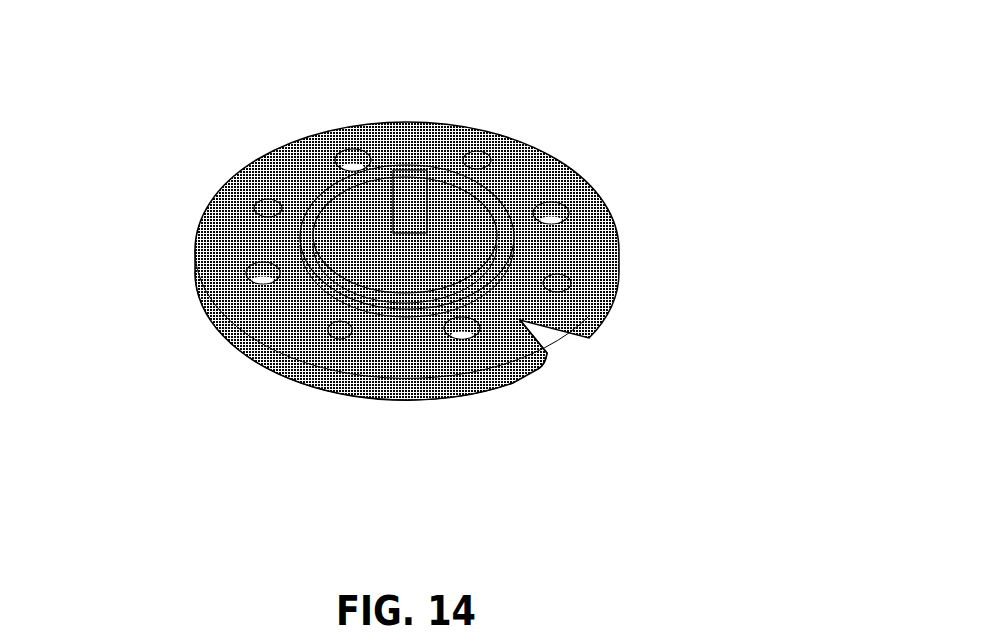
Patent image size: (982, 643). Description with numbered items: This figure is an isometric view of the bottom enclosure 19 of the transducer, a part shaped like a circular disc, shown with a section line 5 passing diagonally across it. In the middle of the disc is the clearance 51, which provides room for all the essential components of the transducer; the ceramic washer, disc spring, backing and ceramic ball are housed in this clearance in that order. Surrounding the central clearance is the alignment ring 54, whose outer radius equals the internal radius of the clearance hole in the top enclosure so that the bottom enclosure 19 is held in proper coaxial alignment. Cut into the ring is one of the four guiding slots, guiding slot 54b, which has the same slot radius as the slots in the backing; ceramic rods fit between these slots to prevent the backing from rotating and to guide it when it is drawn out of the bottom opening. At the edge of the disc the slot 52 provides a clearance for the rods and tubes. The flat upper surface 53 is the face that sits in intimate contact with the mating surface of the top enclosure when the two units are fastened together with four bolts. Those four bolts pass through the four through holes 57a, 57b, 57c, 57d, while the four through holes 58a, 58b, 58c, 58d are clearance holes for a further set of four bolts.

The bottom enclosure 19 is at (260, 112).
The clearance 51 is at (430, 270).
The slot 52 is at (570, 354).
The surface 53 is at (390, 343).
The alignment ring 54 is at (528, 240).
The guiding slot 54b is at (414, 190).
The through hole 57a is at (576, 284).
The through hole 57b is at (489, 154).
The through hole 57c is at (260, 207).
The through hole 57d is at (336, 341).
The through hole 58a is at (574, 209).
The through hole 58b is at (343, 148).
The through hole 58c is at (258, 274).
The through hole 58d is at (467, 342).
The section line 5 is at (213, 393).